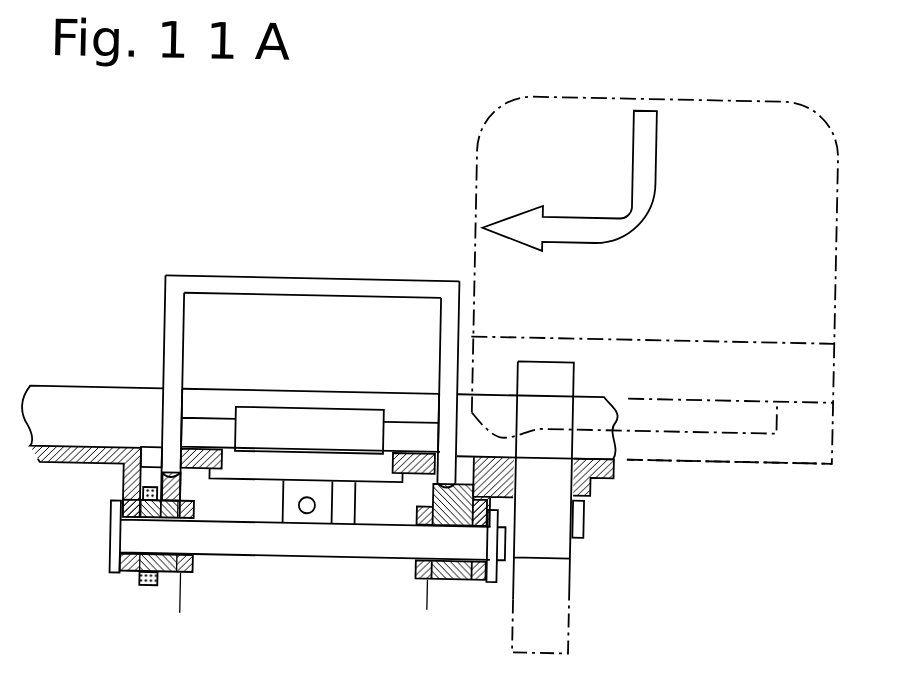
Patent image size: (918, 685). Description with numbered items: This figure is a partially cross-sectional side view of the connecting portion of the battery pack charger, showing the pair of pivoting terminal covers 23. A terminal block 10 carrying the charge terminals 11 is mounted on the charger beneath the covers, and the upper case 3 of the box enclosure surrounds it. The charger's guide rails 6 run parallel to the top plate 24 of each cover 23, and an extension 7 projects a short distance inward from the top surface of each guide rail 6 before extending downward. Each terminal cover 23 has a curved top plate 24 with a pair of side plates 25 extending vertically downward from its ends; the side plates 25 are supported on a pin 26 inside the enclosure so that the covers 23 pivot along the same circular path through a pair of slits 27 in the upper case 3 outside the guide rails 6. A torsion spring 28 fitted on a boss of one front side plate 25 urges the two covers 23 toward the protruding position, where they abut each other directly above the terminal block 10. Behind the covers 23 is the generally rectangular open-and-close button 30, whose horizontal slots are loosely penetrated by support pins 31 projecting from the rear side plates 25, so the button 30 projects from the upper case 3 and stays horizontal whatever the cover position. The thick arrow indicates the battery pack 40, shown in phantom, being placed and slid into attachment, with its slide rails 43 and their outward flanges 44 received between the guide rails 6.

The upper case 3 is at (77, 451).
The guide rail 6 is at (216, 385).
The extension 7 is at (241, 392).
The terminal block 10 is at (366, 466).
The charge terminal 11 is at (321, 417).
The terminal cover 23 is at (275, 358).
The top plate 24 is at (266, 278).
The side plate 25 is at (177, 322).
The pin 26 is at (308, 542).
The slit 27 is at (159, 452).
The torsion spring 28 is at (155, 584).
The open-and-close button 30 is at (584, 368).
The support pin 31 is at (591, 513).
The battery pack 40 is at (639, 88).
The slide rail 43 is at (727, 449).
The flange 44 is at (681, 439).